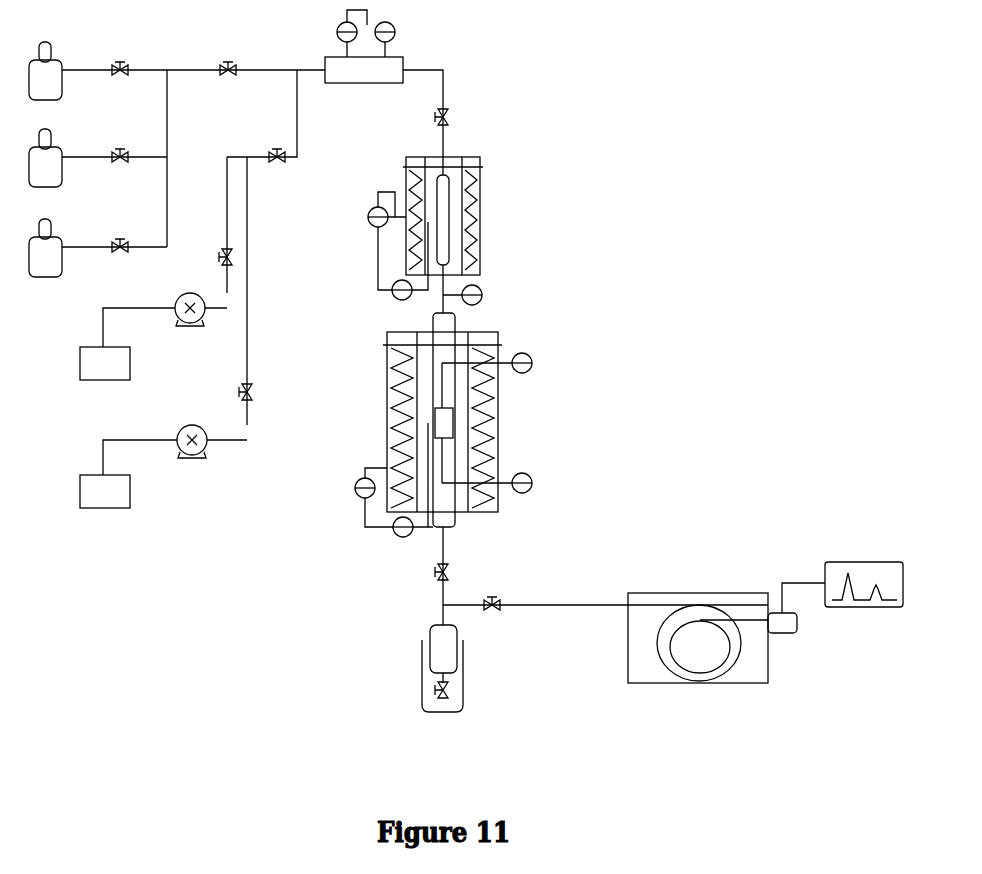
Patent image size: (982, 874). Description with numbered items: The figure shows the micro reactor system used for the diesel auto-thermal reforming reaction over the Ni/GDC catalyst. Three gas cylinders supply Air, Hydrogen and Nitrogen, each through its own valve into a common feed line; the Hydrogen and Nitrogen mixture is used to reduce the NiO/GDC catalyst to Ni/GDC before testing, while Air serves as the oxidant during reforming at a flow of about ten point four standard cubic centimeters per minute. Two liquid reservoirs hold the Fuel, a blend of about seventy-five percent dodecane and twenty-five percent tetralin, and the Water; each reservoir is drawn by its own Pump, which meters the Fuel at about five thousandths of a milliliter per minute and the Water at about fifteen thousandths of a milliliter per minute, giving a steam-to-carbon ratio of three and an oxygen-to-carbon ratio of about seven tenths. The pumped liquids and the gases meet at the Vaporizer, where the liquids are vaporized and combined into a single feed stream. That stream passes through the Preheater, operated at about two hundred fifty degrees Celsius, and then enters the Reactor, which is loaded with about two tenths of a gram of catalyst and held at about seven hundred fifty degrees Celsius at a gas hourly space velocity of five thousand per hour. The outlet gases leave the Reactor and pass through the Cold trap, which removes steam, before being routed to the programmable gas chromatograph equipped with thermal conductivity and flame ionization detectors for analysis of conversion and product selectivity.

The air Air is at (62, 67).
The hydrogen Hydrogen is at (94, 152).
The nitrogen Nitrogen is at (90, 242).
The pump Pump is at (196, 394).
The fuel Fuel is at (105, 379).
The water Water is at (105, 509).
The vaporizer Vaporizer is at (360, 64).
The preheater Preheater is at (480, 231).
The reactor Reactor is at (471, 425).
The cold trap Cold trap is at (497, 668).